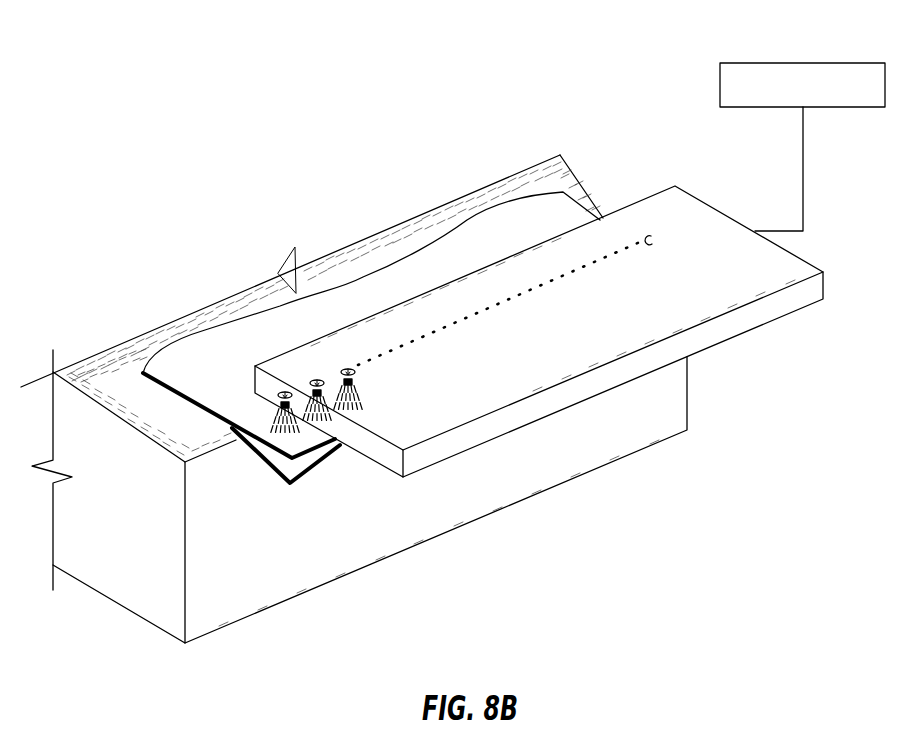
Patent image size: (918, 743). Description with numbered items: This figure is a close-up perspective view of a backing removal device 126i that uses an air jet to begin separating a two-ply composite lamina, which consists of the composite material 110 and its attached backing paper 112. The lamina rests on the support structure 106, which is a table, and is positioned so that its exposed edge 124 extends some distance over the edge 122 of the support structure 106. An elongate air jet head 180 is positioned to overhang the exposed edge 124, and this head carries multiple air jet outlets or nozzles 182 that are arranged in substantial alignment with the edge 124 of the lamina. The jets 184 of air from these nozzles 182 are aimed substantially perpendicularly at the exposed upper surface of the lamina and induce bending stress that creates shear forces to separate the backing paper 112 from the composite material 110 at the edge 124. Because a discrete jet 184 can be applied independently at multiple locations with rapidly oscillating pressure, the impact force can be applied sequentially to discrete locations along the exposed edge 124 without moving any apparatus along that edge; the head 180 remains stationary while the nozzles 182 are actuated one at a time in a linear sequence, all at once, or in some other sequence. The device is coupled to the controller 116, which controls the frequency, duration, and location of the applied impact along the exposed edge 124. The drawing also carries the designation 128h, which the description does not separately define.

The support structure 106 is at (97, 370).
The composite material 110 is at (292, 469).
The backing paper 112 is at (207, 364).
The controller 116 is at (805, 63).
The edge of the support structure 122 is at (212, 458).
The exposed edge of the composite lamina 124 is at (575, 195).
The backing removal device 126i is at (237, 188).
The web region 128h is at (336, 320).
The elongate air jet head 180 is at (726, 206).
The air jet nozzles 182 is at (392, 350).
The jets of air 184 is at (288, 432).